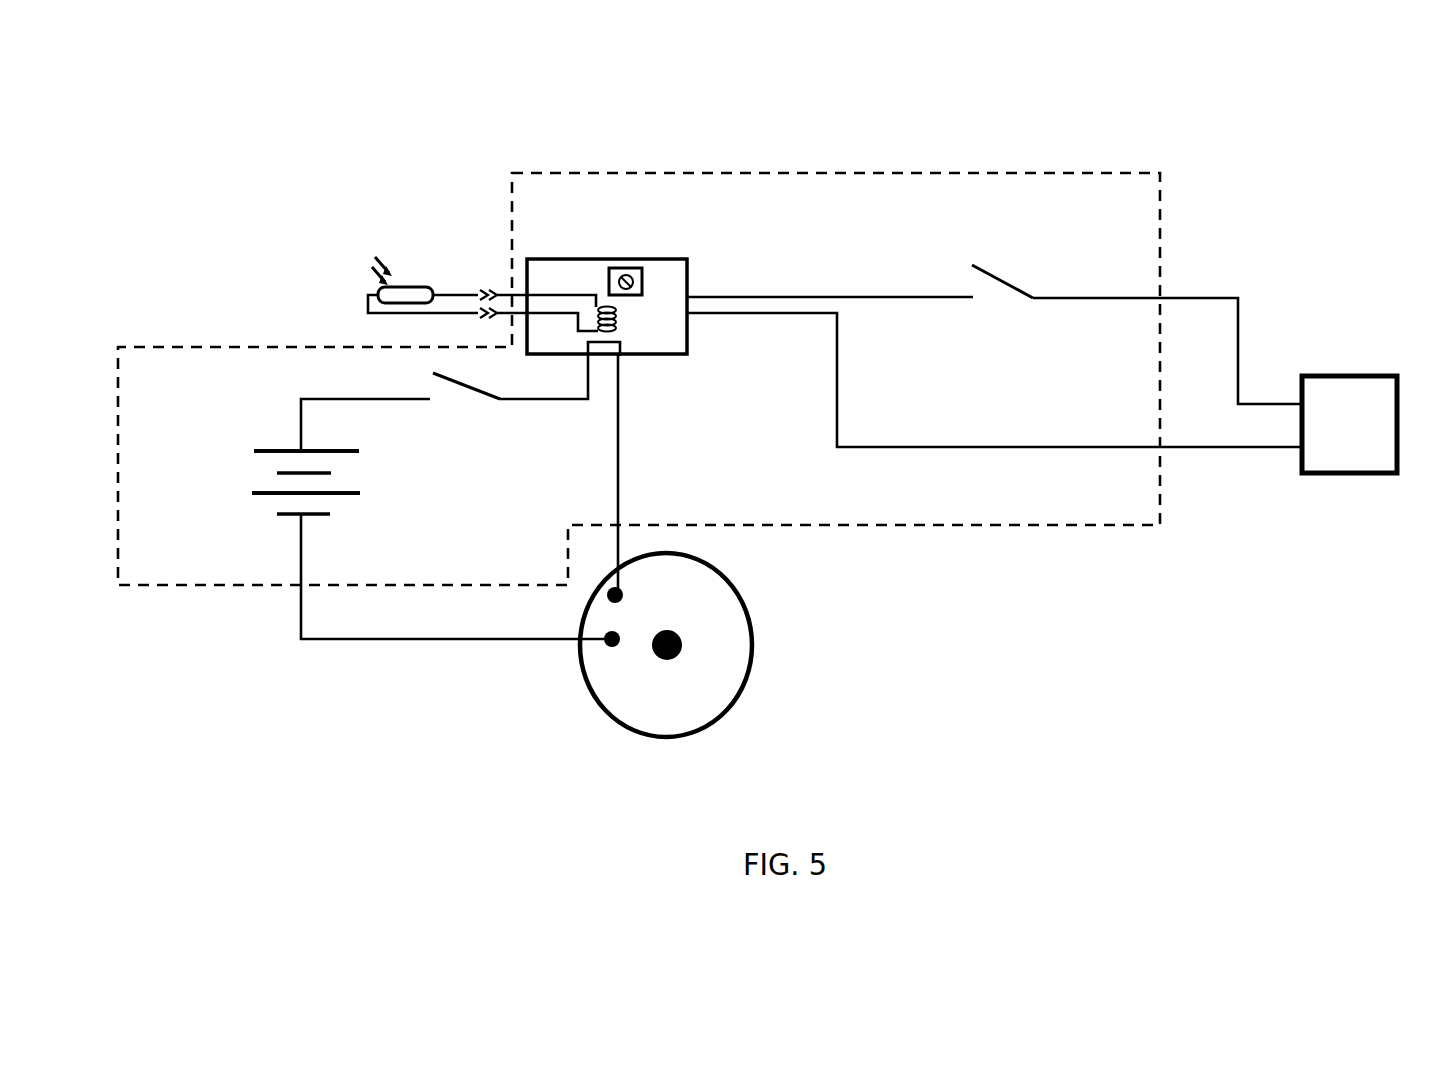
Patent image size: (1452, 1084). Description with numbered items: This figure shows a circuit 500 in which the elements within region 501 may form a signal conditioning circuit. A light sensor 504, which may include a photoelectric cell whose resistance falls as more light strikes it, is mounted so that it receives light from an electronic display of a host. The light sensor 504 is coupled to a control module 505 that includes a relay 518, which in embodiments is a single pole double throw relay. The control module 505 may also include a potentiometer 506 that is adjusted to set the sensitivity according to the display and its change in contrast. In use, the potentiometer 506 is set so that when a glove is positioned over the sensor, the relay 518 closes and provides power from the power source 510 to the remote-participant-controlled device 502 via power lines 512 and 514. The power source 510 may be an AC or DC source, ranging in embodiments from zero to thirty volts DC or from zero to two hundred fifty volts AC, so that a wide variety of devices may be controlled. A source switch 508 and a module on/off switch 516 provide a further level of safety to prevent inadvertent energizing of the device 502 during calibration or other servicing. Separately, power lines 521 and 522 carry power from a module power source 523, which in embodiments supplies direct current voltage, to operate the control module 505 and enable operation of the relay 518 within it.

The circuit 500 is at (1199, 183).
The region 501 is at (976, 172).
The remote-participant-controlled device 502 is at (732, 640).
The light sensor 504 is at (407, 278).
The control module 505 is at (578, 259).
The potentiometer 506 is at (645, 278).
The source switch 508 is at (1006, 283).
The power source 510 is at (245, 470).
The power line 512 is at (555, 643).
The power line 514 is at (615, 483).
The module on/off switch 516 is at (470, 390).
The relay 518 is at (630, 332).
The power line 521 is at (1273, 402).
The power line 522 is at (1272, 449).
The module power source 523 is at (1355, 428).